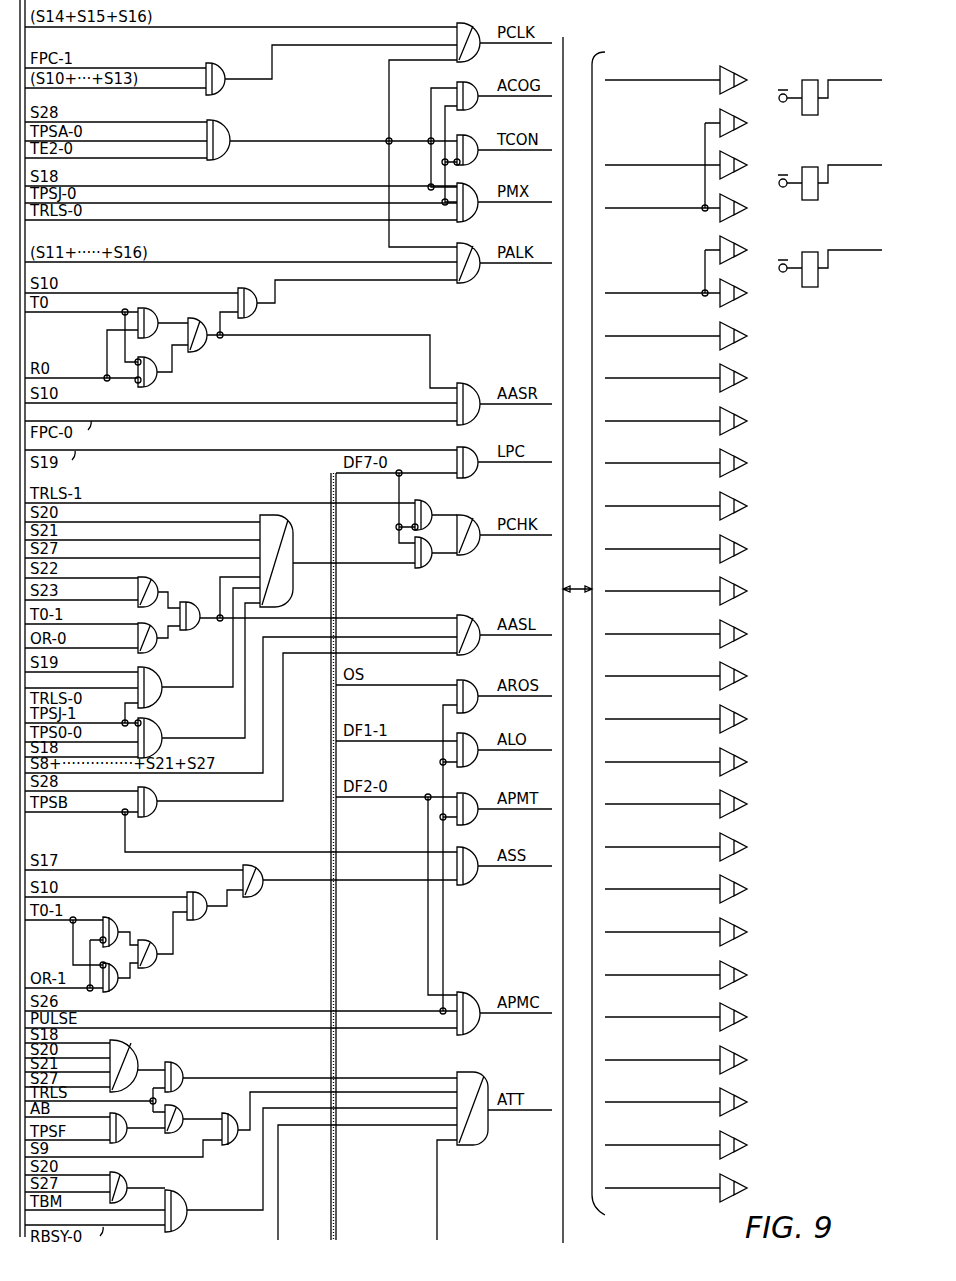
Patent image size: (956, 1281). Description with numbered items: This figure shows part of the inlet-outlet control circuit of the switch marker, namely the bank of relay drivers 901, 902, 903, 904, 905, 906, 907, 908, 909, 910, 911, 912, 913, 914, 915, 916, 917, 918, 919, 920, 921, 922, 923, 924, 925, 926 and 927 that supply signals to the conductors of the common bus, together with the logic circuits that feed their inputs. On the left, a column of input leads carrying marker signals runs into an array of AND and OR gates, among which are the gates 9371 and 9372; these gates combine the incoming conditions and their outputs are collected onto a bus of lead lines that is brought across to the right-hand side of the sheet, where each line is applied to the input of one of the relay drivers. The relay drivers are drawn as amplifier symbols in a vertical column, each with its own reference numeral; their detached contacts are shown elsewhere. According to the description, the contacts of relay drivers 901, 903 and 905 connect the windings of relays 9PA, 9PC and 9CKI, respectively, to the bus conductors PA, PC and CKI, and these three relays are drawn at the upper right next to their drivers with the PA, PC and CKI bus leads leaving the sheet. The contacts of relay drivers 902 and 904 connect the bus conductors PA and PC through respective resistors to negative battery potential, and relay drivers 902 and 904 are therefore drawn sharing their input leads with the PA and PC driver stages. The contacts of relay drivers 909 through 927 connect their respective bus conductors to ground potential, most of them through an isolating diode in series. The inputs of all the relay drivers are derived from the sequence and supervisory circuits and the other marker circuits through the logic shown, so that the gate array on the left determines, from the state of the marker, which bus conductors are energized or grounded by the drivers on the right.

The AND gate 9371 is at (218, 63).
The AND gate 9372 is at (219, 120).
The relay driver 901 is at (741, 71).
The relay driver 902 is at (741, 114).
The relay driver 903 is at (741, 156).
The relay driver 904 is at (741, 199).
The relay driver 905 is at (741, 241).
The relay driver 906 is at (741, 284).
The relay driver 907 is at (741, 327).
The relay driver 908 is at (741, 369).
The relay driver 909 is at (741, 412).
The relay driver 910 is at (741, 454).
The relay driver 911 is at (741, 497).
The relay driver 912 is at (741, 540).
The relay driver 913 is at (741, 582).
The relay driver 914 is at (741, 625).
The relay driver 915 is at (741, 667).
The relay driver 916 is at (741, 710).
The relay driver 917 is at (741, 753).
The relay driver 918 is at (741, 795).
The relay driver 919 is at (741, 838).
The relay driver 920 is at (741, 880).
The relay driver 921 is at (741, 923).
The relay driver 922 is at (741, 966).
The relay driver 923 is at (741, 1008).
The relay driver 924 is at (741, 1051).
The relay driver 925 is at (741, 1093).
The relay driver 926 is at (741, 1136).
The relay driver 927 is at (741, 1179).
The relay 9PA is at (806, 80).
The relay 9PC is at (806, 167).
The relay 9CKI is at (806, 287).